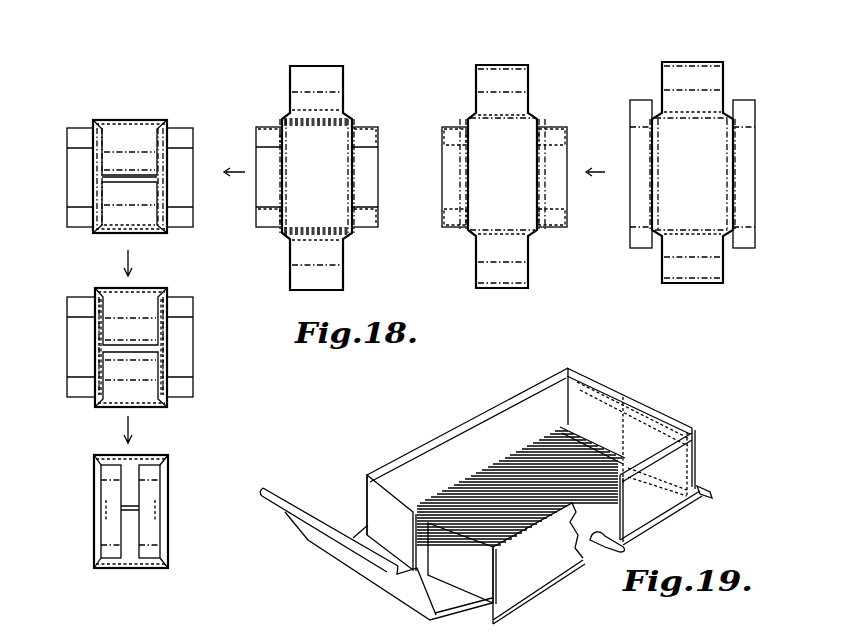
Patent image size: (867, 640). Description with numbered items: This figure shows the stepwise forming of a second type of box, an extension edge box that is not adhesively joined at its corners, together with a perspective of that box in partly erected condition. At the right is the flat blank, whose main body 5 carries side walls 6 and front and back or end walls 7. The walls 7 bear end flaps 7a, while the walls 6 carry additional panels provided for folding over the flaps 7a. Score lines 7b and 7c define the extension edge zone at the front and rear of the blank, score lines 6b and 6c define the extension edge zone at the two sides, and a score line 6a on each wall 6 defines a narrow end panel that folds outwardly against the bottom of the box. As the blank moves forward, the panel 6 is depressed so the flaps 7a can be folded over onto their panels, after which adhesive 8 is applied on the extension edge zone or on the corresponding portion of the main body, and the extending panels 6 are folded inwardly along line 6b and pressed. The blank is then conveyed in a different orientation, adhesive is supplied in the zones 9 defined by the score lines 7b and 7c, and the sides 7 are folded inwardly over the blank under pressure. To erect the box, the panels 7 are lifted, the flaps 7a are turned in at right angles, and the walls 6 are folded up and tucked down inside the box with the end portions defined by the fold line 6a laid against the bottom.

In FIG. 18, the main body 5 is at (413, 315).
In FIG. 19, the main body 5 is at (519, 488).
In FIG. 18, the side wall 6 is at (698, 75).
In FIG. 19, the side wall 6 is at (477, 494).
In FIG. 18, the score line 6a is at (680, 60).
In FIG. 19, the score line 6a is at (592, 445).
In FIG. 18, the score line 6b is at (686, 120).
In FIG. 19, the score line 6b is at (704, 492).
In FIG. 18, the score line 6c is at (680, 108).
In FIG. 19, the score line 6c is at (394, 570).
In FIG. 18, the end wall 7 is at (58, 521).
In FIG. 19, the end wall 7 is at (529, 496).
In FIG. 18, the end flap 7a is at (636, 100).
In FIG. 19, the end flap 7a is at (527, 493).
In FIG. 18, the score line 7b is at (658, 166).
In FIG. 19, the score line 7b is at (665, 522).
In FIG. 18, the score line 7c is at (640, 152).
In FIG. 19, the score line 7c is at (465, 500).
In FIG. 18, the adhesive 8 is at (298, 113).
In FIG. 18, the adhesive zone 9 is at (100, 335).